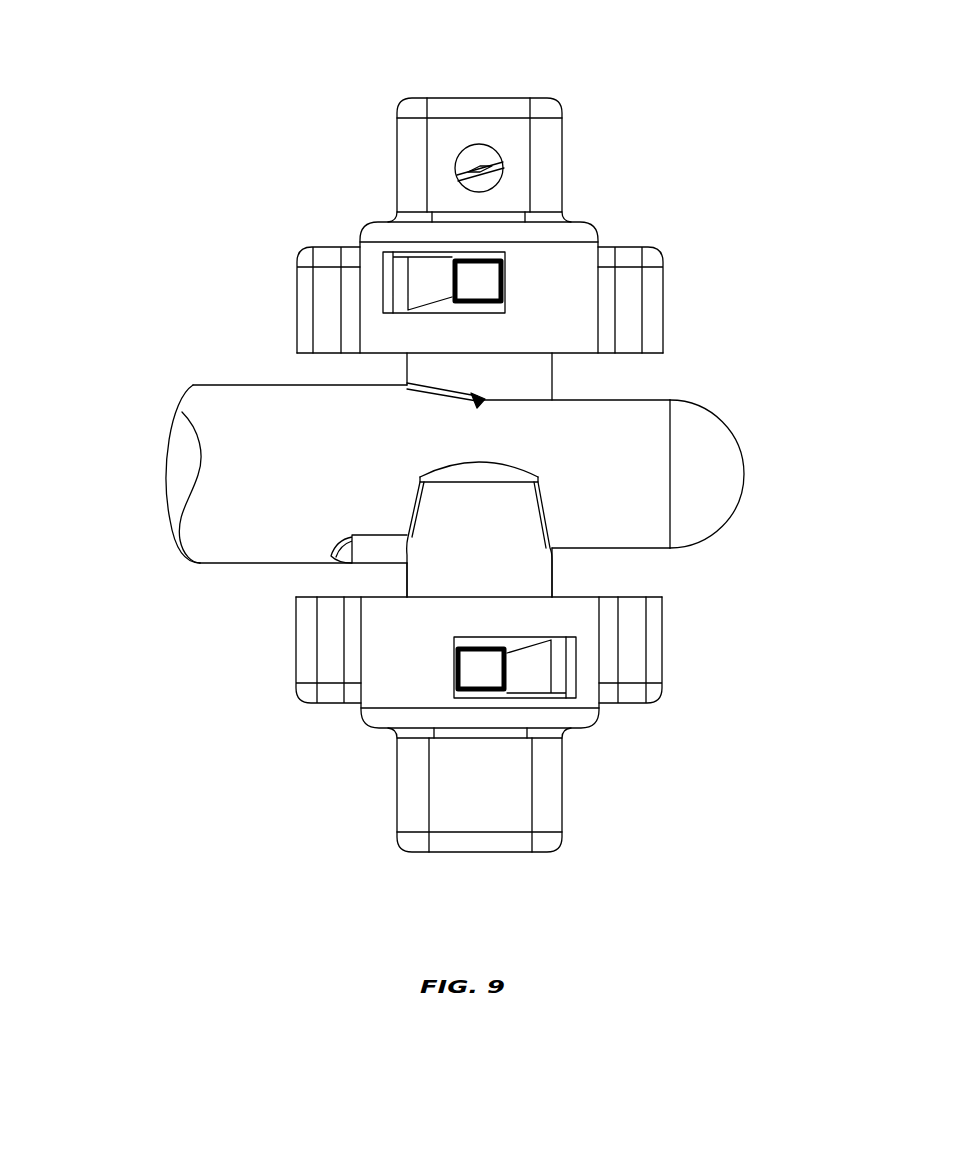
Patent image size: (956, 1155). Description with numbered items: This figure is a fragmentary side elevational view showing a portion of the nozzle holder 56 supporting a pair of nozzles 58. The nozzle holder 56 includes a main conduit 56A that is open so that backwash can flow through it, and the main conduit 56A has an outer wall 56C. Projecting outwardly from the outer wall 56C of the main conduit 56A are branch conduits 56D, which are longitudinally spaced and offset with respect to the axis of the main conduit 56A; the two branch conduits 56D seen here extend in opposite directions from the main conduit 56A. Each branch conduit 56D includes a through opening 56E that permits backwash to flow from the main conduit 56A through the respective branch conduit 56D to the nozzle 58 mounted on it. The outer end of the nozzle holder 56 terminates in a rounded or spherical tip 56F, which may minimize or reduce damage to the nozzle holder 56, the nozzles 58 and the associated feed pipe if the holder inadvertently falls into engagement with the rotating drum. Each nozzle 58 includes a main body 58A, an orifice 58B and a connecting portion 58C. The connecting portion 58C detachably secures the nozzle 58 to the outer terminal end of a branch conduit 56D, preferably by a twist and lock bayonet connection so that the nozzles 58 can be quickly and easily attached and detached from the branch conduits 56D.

The nozzle holder 56 is at (435, 492).
The main conduit 56A is at (250, 510).
The outer wall 56C is at (178, 483).
The branch conduit 56D is at (518, 382).
The through opening 56E is at (505, 560).
The rounded or spherical tip 56F is at (695, 458).
The nozzle 58 is at (494, 455).
The main body 58A is at (447, 148).
The orifice 58B is at (480, 165).
The connecting portion 58C is at (550, 280).